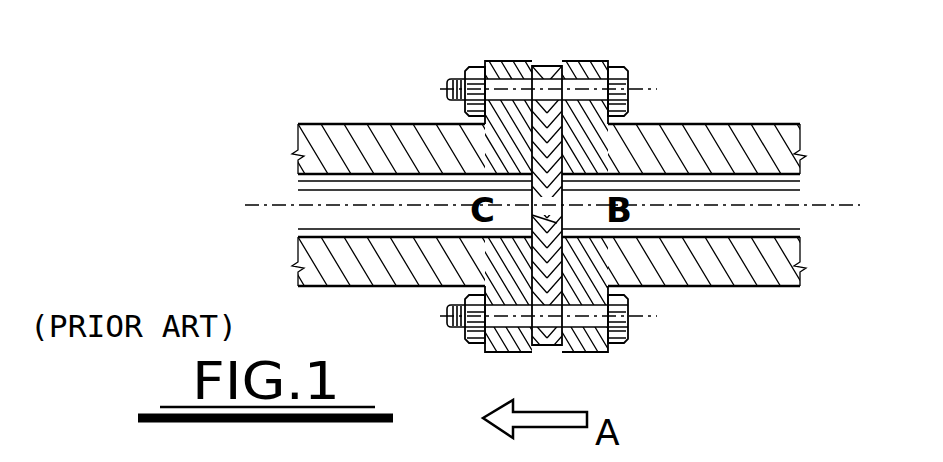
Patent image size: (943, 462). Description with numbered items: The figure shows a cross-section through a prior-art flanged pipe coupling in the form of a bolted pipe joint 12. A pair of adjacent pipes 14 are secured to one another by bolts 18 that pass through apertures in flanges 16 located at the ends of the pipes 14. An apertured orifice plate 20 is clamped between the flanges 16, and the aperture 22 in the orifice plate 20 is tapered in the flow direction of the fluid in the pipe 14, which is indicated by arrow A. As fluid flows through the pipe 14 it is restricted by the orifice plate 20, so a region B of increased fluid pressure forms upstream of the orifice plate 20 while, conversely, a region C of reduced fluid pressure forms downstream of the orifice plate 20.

The bolted pipe joint 12 is at (452, 62).
The pipe 14 is at (352, 124).
The flange 16 is at (508, 64).
The bolt 18 is at (629, 75).
The orifice plate 20 is at (555, 68).
The aperture 22 is at (535, 197).